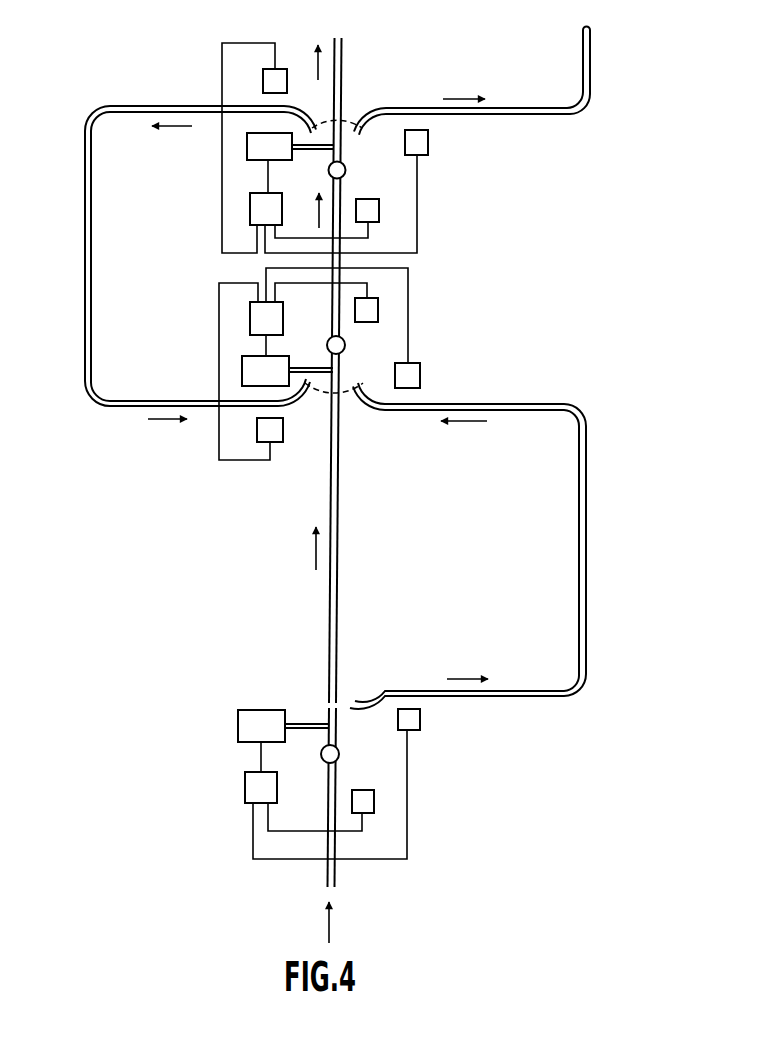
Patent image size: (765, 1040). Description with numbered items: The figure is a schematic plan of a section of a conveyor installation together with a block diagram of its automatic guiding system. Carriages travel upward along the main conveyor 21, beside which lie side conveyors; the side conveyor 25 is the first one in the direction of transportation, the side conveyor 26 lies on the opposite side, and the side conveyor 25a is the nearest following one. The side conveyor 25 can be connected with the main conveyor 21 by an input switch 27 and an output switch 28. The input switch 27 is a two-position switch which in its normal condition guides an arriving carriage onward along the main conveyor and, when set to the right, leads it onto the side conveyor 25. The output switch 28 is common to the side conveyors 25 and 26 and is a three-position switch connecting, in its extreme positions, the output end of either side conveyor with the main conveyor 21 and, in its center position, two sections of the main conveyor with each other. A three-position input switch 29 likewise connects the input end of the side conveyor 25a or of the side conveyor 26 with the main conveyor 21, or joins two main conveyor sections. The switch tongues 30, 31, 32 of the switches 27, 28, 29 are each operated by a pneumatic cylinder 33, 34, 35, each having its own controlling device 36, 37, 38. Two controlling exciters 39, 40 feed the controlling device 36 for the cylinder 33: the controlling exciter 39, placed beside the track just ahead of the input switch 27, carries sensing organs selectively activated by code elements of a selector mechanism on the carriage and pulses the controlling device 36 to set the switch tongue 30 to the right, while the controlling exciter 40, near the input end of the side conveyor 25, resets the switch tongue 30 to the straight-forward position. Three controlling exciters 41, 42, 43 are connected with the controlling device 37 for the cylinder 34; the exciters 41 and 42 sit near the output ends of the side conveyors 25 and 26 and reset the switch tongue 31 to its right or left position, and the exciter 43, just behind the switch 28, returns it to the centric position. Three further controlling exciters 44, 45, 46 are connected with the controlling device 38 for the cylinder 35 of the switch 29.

The main conveyor 21 is at (330, 607).
The side conveyor 25 is at (579, 551).
The side conveyor 25a is at (583, 66).
The side conveyor 26 is at (93, 247).
The input switch 27 is at (339, 755).
The output switch 28 is at (345, 343).
The input switch 29 is at (346, 172).
The switch tongue 30 is at (337, 724).
The switch tongue 31 is at (341, 369).
The switch tongue 32 is at (345, 146).
The pneumatic cylinder 33 is at (238, 727).
The pneumatic cylinder 34 is at (252, 368).
The pneumatic cylinder 35 is at (258, 147).
The controlling device 36 is at (250, 790).
The controlling device 37 is at (258, 318).
The controlling device 38 is at (258, 203).
The controlling exciter 39 is at (374, 798).
The controlling exciter 40 is at (420, 718).
The controlling exciter 41 is at (415, 376).
The controlling exciter 42 is at (280, 438).
The controlling exciter 43 is at (368, 312).
The controlling exciter 44 is at (368, 212).
The controlling exciter 45 is at (268, 80).
The controlling exciter 46 is at (418, 143).